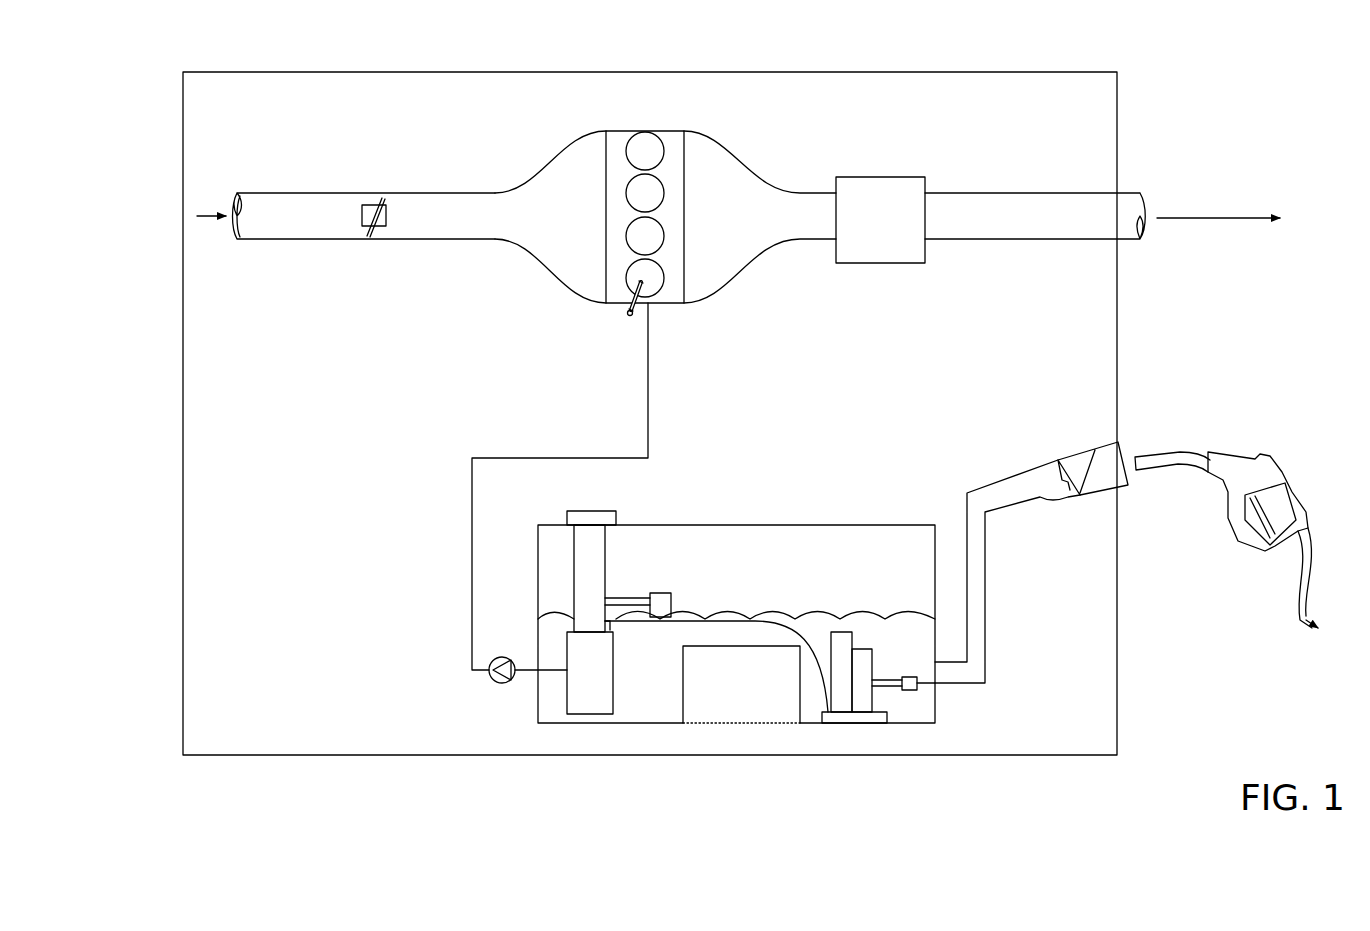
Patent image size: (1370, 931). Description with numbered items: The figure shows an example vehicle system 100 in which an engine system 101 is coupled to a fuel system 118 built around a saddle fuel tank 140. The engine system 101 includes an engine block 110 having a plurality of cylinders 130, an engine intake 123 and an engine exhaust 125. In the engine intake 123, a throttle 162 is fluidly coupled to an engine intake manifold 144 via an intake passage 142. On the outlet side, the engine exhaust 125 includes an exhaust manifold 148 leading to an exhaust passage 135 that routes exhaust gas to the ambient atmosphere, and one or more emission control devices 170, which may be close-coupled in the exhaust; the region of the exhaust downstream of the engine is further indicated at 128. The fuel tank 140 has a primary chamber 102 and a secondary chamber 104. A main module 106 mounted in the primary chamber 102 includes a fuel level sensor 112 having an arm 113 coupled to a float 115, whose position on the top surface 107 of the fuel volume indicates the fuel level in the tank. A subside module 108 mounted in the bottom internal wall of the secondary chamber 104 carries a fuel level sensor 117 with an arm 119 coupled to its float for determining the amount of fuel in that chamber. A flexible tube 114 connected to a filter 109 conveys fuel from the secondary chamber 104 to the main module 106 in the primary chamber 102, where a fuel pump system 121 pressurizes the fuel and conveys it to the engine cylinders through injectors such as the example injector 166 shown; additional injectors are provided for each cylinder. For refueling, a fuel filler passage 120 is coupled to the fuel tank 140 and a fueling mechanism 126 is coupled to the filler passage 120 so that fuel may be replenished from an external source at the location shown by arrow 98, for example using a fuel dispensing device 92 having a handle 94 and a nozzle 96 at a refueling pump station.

The vehicle system 100 is at (948, 758).
The engine system 101 is at (250, 133).
The primary chamber 102 is at (646, 695).
The secondary chamber 104 is at (911, 708).
The main module 106 is at (622, 553).
The top surface of fuel volume 107 is at (762, 620).
The subside module 108 is at (862, 630).
The filter 109 is at (825, 712).
The engine block 110 is at (684, 200).
The fuel level sensor 112 is at (680, 590).
The arm 113 is at (613, 598).
The flexible tube 114 is at (655, 620).
The float 115 is at (672, 605).
The fuel level sensor 117 is at (890, 658).
The fuel system 118 is at (962, 445).
The arm 119 is at (884, 681).
The fuel filler passage 120 is at (985, 612).
The fuel pump system 121 is at (497, 658).
The engine intake 123 is at (552, 152).
The engine exhaust 125 is at (826, 136).
The fueling mechanism 126 is at (1105, 495).
The exhaust passage 128 is at (938, 130).
The cylinders 130 is at (656, 135).
The exhaust passage 135 is at (1065, 193).
The fuel tank 140 is at (738, 512).
The intake passage 142 is at (401, 240).
The engine intake manifold 144 is at (550, 217).
The exhaust manifold 148 is at (760, 217).
The throttle 162 is at (386, 228).
The injector 166 is at (626, 314).
The emission control device 170 is at (868, 177).
The fuel dispensing device 92 is at (1252, 432).
The handle 94 is at (1276, 470).
The nozzle 96 is at (1142, 470).
The arrow 98 is at (1306, 628).